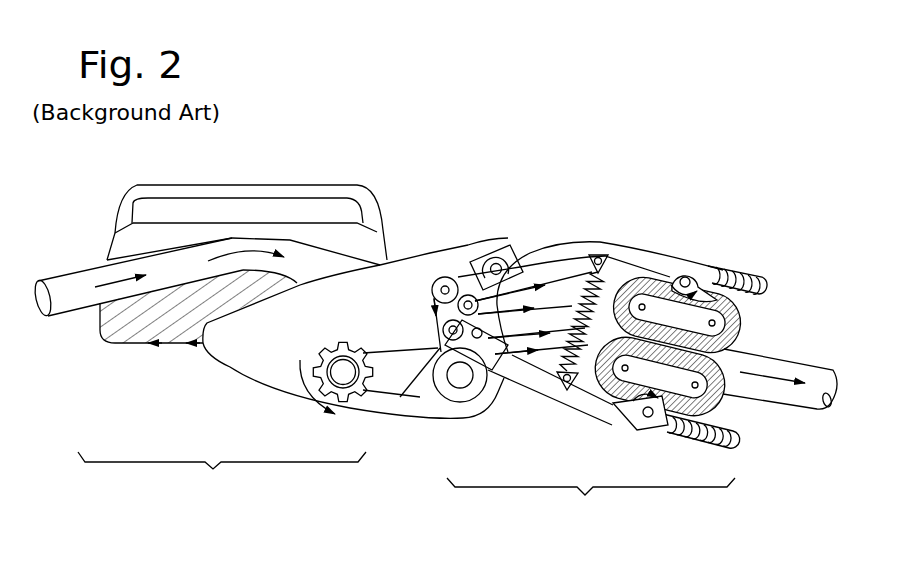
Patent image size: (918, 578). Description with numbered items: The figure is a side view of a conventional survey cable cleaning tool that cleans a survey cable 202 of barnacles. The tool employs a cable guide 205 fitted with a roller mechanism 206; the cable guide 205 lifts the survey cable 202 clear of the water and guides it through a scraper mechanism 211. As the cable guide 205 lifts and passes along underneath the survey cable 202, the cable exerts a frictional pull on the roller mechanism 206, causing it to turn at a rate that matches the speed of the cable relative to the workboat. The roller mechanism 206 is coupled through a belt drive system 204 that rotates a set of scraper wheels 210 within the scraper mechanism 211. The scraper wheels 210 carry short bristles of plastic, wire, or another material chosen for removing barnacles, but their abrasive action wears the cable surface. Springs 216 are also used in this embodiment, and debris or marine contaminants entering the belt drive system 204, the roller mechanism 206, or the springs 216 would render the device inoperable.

The survey cable 202 is at (75, 270).
The belt drive system 204 is at (410, 402).
The cable guide 205 is at (345, 341).
The roller mechanism 206 is at (100, 330).
The scraper wheels 210 is at (717, 270).
The scraper mechanism 211 is at (634, 382).
The springs 216 is at (560, 372).